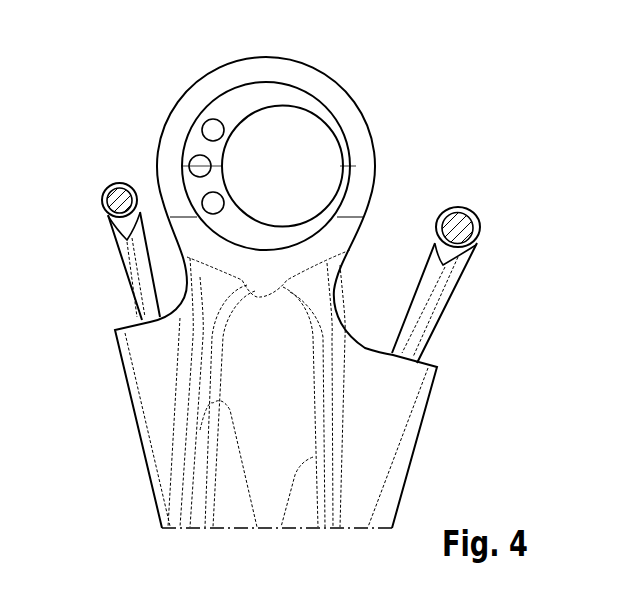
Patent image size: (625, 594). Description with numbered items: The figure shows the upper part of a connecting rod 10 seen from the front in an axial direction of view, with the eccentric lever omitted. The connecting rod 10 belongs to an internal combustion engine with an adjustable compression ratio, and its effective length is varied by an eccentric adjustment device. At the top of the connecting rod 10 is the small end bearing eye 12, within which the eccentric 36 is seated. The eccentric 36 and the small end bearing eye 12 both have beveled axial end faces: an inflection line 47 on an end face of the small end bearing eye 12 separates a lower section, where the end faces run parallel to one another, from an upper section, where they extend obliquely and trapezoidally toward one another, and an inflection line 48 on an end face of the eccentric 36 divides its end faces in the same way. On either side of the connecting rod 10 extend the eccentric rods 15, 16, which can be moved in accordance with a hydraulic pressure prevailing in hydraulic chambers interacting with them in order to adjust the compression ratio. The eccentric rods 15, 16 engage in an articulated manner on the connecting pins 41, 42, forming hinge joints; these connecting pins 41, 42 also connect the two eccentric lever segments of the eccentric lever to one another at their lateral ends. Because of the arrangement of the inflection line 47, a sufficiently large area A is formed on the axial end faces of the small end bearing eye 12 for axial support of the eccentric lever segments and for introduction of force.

The connecting rod 10 is at (418, 81).
The small end bearing eye 12 is at (322, 80).
The eccentric 36 is at (258, 95).
The inflection line 47 is at (178, 216).
The inflection line 48 is at (184, 162).
The eccentric rod 15 is at (138, 277).
The eccentric rod 16 is at (433, 290).
The connecting pin 41 is at (102, 193).
The connecting pin 42 is at (462, 208).
The area A is at (295, 263).